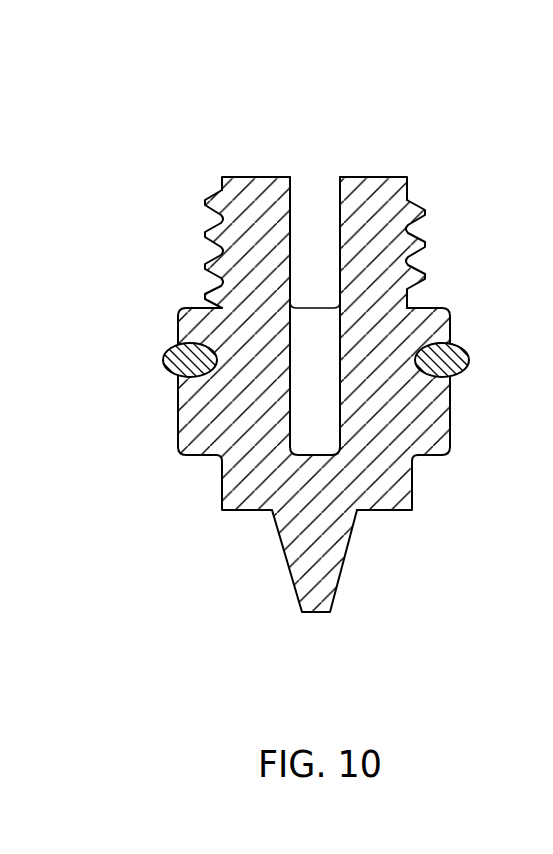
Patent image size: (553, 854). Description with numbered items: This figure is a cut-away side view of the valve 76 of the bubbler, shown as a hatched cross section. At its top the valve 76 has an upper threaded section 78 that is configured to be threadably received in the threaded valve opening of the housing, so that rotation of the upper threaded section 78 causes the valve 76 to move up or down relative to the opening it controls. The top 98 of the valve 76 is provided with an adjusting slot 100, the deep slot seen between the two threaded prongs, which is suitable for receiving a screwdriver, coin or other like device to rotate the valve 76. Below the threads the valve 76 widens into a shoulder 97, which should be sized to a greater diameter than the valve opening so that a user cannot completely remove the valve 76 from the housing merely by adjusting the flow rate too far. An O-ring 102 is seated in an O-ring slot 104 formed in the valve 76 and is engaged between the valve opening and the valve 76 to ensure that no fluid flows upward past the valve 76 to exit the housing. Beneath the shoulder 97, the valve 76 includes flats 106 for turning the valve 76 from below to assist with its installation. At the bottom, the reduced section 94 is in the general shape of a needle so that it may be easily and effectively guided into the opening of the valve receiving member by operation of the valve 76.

The valve 76 is at (440, 113).
The upper threaded section 78 is at (434, 212).
The reduced section 94 is at (335, 566).
The shoulder 97 is at (433, 307).
The top 98 is at (252, 172).
The adjusting slot 100 is at (312, 252).
The O-ring 102 is at (455, 373).
The O-ring slot 104 is at (188, 343).
The flats 106 is at (225, 489).